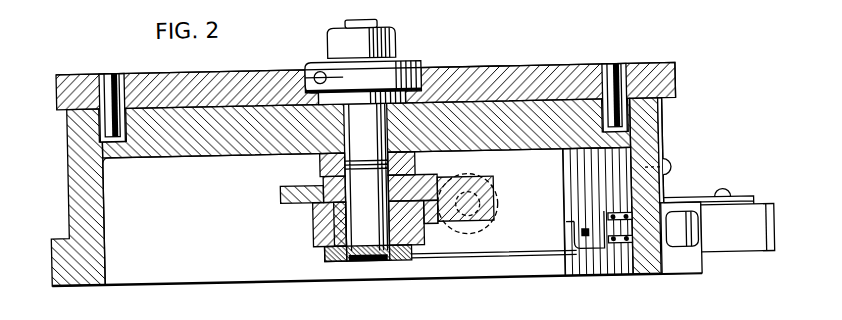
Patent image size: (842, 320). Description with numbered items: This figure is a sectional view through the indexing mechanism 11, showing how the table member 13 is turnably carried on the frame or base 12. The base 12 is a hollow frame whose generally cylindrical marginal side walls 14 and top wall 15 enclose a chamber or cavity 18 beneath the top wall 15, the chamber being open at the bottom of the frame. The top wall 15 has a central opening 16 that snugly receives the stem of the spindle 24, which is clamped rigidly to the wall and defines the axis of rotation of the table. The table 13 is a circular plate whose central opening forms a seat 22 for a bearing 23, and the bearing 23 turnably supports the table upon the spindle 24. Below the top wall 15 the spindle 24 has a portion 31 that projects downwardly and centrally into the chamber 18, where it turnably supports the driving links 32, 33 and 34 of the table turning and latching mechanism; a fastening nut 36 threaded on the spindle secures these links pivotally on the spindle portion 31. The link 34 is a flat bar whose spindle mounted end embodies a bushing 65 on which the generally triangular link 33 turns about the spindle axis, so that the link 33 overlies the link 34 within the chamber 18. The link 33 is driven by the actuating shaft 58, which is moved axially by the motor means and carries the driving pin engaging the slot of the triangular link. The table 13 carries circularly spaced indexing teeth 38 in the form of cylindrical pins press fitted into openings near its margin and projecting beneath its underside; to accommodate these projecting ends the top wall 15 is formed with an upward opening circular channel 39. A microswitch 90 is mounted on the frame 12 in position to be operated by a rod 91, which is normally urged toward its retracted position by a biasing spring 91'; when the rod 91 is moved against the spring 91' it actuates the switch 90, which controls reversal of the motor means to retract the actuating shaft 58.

The indexing mechanism 11 is at (697, 76).
The frame or base 12 is at (72, 161).
The table member 13 is at (62, 80).
The marginal side walls 14 is at (632, 190).
The top wall 15 is at (180, 150).
The central opening 16 is at (388, 140).
The chamber or cavity 18 is at (196, 223).
The seat 22 is at (310, 70).
The bearing 23 is at (420, 64).
The spindle 24 is at (378, 21).
The spindle portion 31 is at (333, 45).
The driving link 32 is at (280, 191).
The link 33 is at (312, 218).
The link 34 is at (323, 246).
The fastening nut 36 is at (340, 260).
The indexing teeth 38 is at (112, 68).
The circular channel 39 is at (100, 121).
The actuating shaft 58 is at (497, 207).
The bushing 65 is at (398, 262).
The microswitch 90 is at (718, 244).
The rod 91 is at (508, 234).
The biasing spring 91' is at (627, 257).